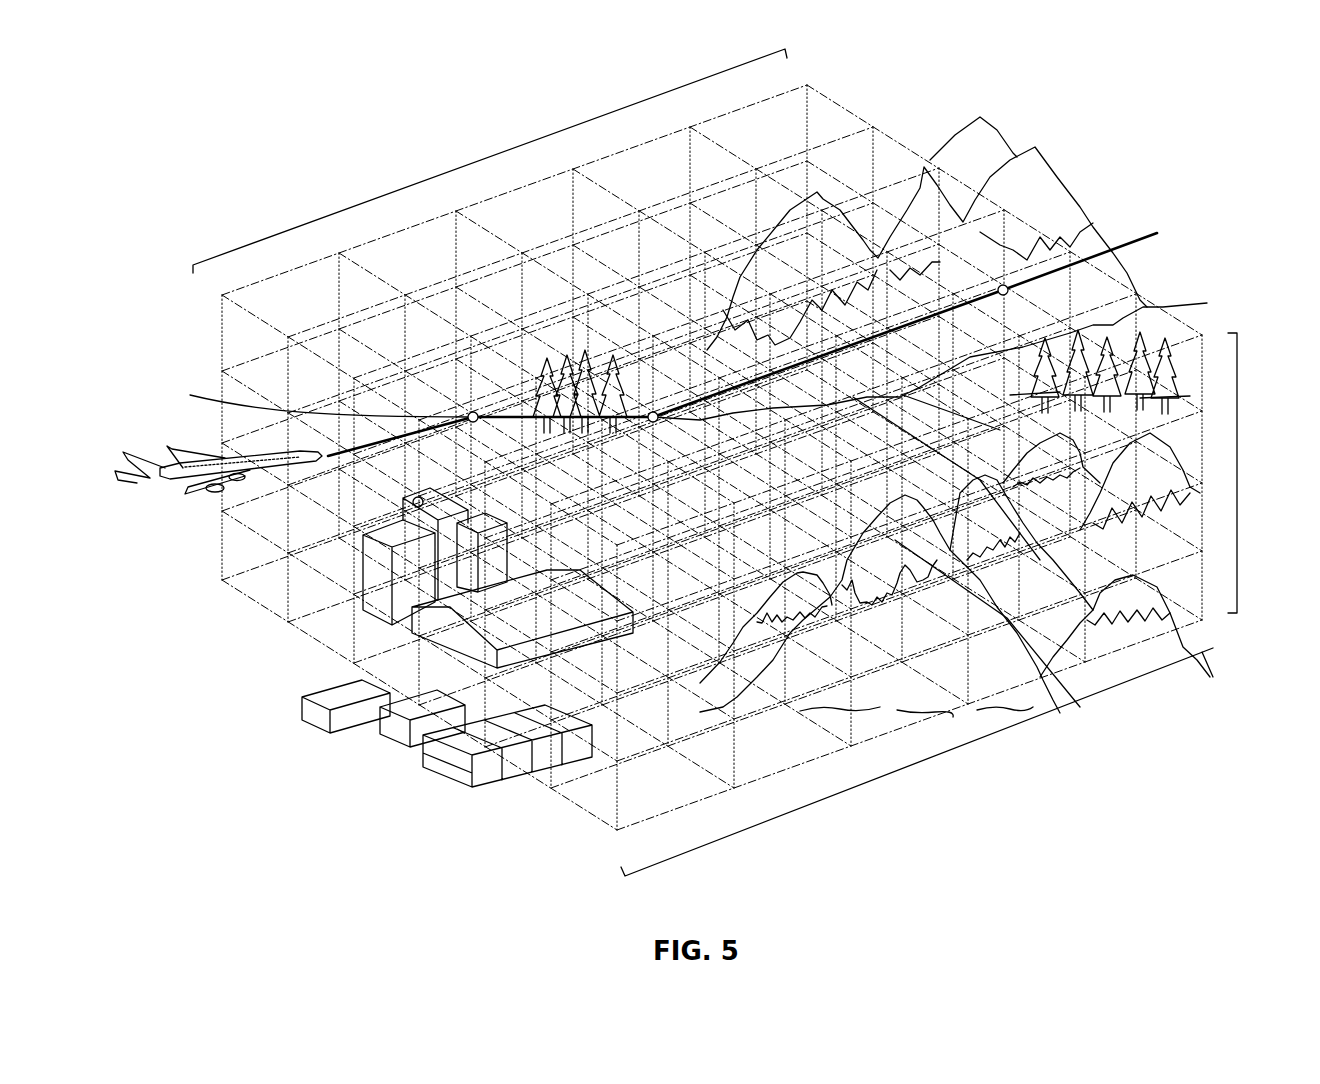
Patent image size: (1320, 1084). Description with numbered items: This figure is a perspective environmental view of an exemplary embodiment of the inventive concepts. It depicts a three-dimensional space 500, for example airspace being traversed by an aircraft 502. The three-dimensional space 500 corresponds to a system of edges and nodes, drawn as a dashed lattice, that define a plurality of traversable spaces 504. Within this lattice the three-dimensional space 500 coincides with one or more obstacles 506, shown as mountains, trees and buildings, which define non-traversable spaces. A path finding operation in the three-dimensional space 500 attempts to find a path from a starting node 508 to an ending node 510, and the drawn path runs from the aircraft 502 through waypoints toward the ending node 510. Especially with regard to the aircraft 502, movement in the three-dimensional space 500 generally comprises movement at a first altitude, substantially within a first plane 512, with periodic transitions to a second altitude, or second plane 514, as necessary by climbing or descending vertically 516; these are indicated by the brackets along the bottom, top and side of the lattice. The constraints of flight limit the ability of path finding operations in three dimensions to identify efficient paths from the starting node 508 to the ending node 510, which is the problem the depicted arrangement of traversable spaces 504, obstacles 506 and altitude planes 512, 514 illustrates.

The three-dimensional space 500 is at (686, 435).
The aircraft 502 is at (177, 480).
The traversable spaces 504 is at (220, 346).
The obstacles 506 is at (992, 142).
The starting node 508 is at (304, 399).
The ending node 510 is at (1010, 287).
The first plane 512 is at (950, 752).
The second plane 514 is at (500, 152).
The climbing or descending vertically 516 is at (1240, 425).